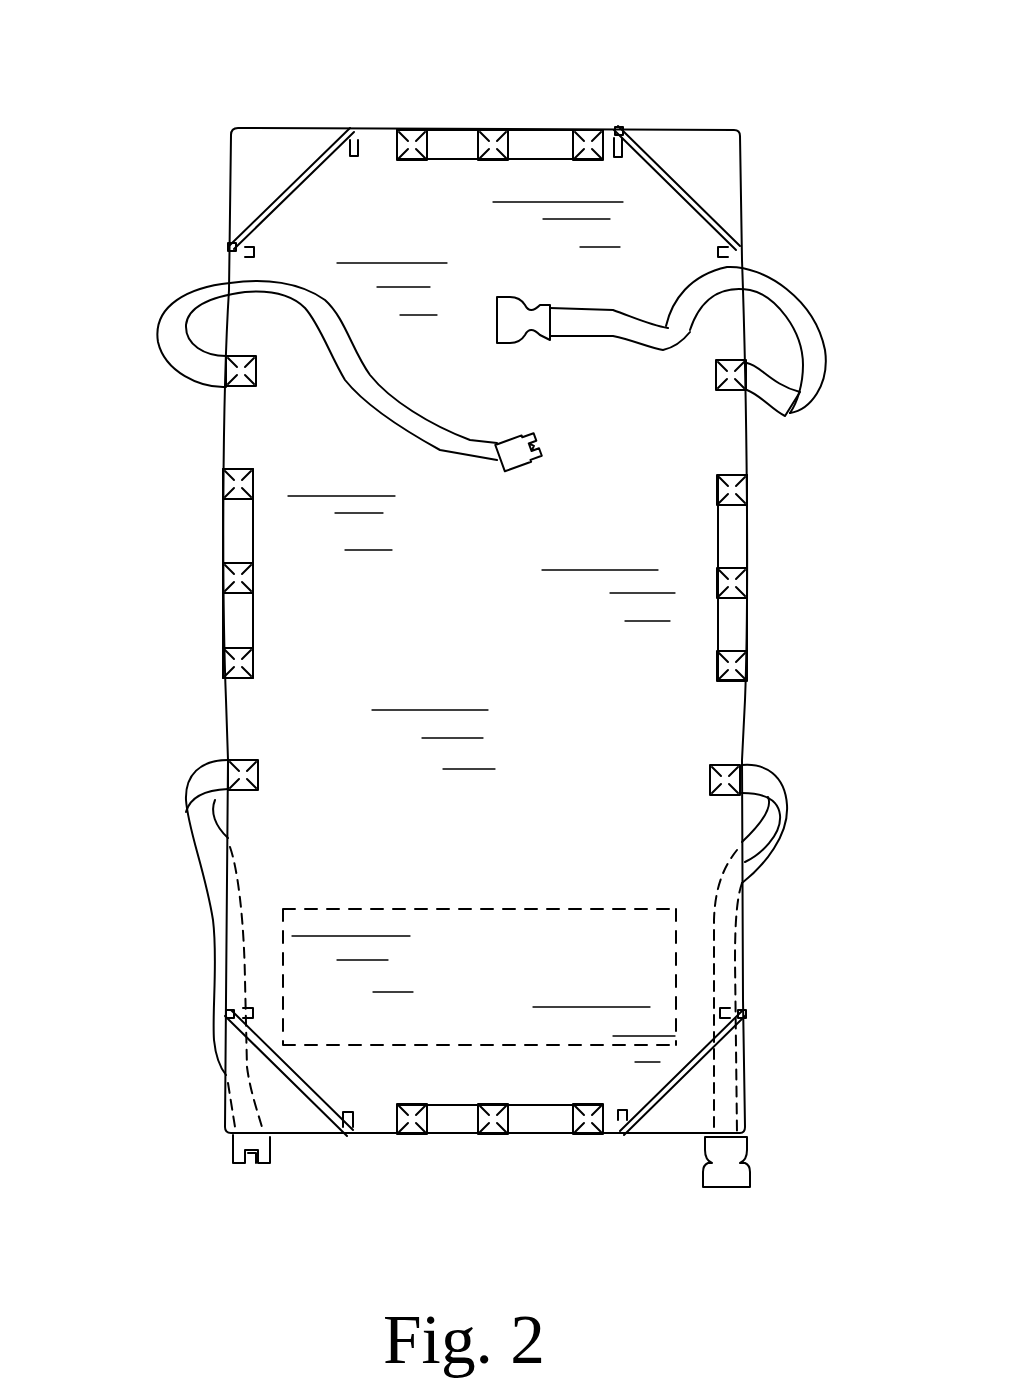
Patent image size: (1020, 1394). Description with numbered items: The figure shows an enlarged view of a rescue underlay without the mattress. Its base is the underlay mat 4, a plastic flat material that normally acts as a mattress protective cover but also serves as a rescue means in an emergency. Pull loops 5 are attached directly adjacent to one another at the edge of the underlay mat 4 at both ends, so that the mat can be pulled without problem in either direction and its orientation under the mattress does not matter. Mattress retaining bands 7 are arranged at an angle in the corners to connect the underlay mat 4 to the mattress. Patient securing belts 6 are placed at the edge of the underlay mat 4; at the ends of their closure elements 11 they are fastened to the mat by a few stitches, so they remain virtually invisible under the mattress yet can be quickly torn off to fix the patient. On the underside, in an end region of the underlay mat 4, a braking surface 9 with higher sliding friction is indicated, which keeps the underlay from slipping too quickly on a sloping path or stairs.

The underlay mat 4 is at (200, 172).
The pull loops 5 is at (540, 145).
The patient securing belts 6 is at (172, 352).
The mattress retaining bands 7 is at (318, 156).
The braking surface 9 is at (640, 957).
The closure elements 11 is at (505, 318).